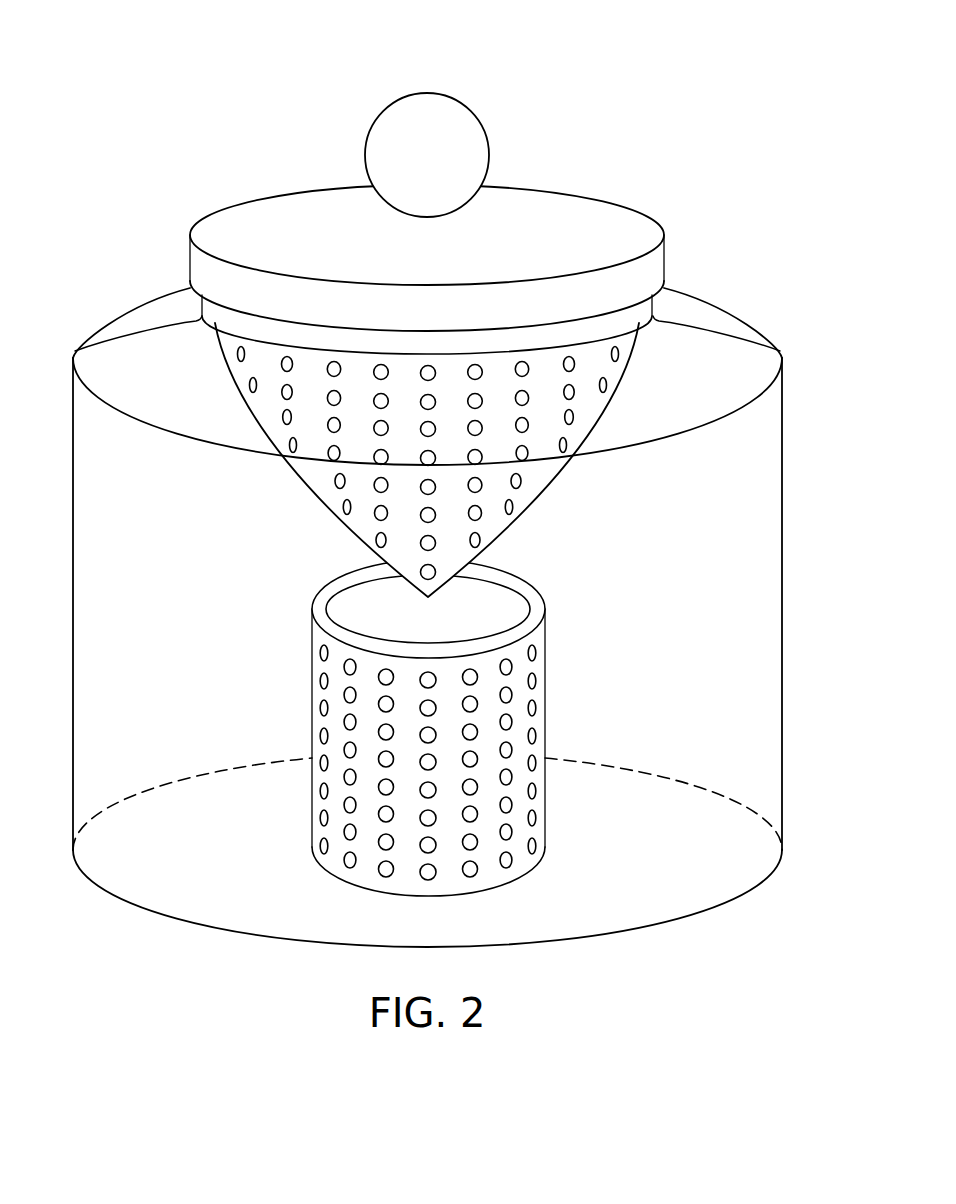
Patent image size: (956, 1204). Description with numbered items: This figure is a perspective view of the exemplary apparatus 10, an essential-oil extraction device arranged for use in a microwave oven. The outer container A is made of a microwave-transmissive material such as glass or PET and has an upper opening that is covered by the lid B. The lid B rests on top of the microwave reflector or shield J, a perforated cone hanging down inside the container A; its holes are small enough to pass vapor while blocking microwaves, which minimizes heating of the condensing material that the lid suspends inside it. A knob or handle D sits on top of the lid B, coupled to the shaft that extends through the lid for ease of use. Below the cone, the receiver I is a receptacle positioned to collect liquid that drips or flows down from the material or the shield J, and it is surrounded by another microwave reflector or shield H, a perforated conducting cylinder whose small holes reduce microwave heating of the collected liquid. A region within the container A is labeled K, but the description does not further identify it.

The apparatus 10 is at (140, 57).
The outer container A is at (73, 382).
The lid B is at (606, 197).
The knob or handle D is at (462, 104).
The microwave reflector or shield J is at (560, 478).
The receiver I is at (545, 608).
The microwave reflector or shield H is at (312, 822).
The interior chamber of container K is at (105, 643).